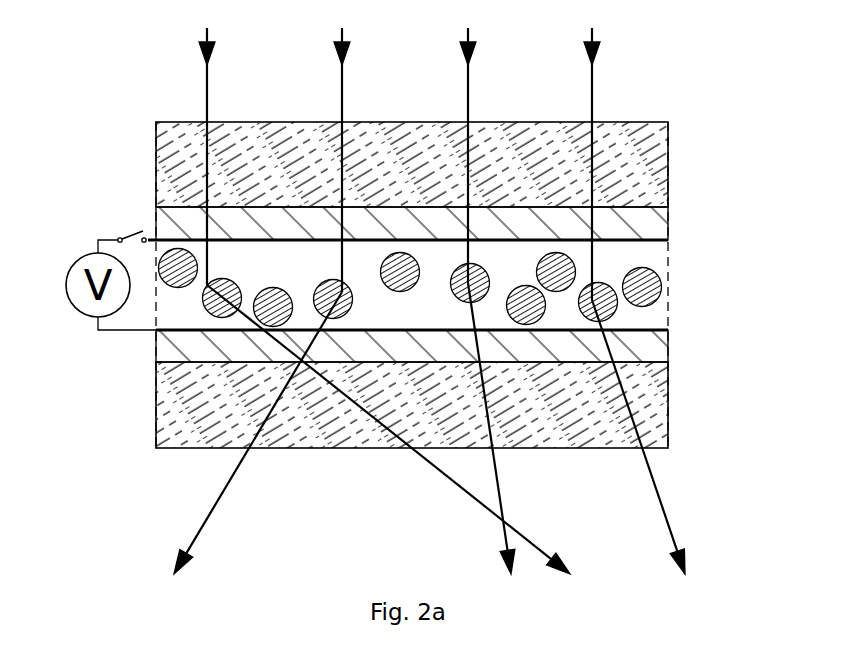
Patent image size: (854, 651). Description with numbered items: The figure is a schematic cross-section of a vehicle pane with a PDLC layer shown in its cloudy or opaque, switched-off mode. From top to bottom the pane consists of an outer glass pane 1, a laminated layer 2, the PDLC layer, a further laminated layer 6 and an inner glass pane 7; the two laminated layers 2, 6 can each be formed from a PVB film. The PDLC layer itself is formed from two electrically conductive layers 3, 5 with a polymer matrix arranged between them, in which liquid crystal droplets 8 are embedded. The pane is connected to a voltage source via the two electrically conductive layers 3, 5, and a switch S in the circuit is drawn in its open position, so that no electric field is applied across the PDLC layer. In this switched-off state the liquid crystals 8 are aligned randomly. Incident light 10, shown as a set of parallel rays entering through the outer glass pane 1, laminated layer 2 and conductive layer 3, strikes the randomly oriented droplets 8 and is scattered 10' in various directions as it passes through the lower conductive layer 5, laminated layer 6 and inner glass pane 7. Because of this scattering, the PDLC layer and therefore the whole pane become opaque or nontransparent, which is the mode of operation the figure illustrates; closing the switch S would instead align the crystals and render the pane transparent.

The outer glass pane 1 is at (668, 165).
The laminated layer 2 is at (668, 223).
The electrically conductive layer 3 is at (668, 240).
The electrically conductive layer 5 is at (668, 330).
The laminated layer 6 is at (668, 346).
The inner glass pane 7 is at (668, 405).
The liquid crystal droplets 8 is at (647, 286).
The incident light 10 is at (372, 164).
The scattered light 10' is at (429, 428).
The switch S is at (132, 225).